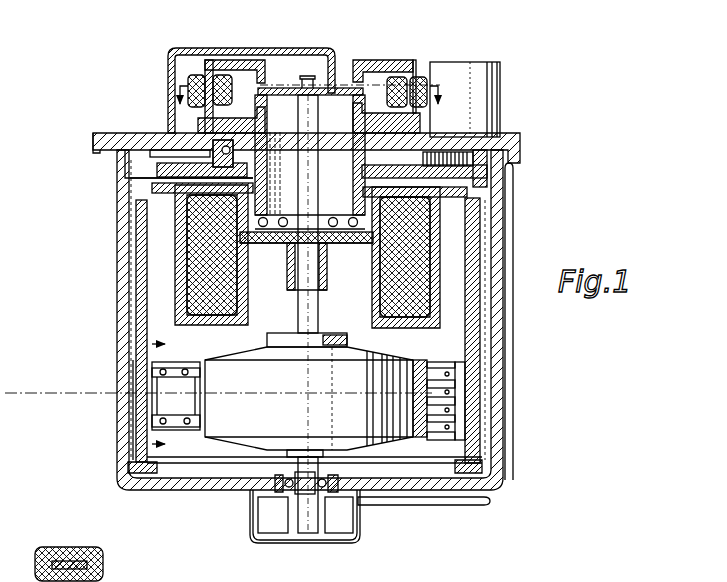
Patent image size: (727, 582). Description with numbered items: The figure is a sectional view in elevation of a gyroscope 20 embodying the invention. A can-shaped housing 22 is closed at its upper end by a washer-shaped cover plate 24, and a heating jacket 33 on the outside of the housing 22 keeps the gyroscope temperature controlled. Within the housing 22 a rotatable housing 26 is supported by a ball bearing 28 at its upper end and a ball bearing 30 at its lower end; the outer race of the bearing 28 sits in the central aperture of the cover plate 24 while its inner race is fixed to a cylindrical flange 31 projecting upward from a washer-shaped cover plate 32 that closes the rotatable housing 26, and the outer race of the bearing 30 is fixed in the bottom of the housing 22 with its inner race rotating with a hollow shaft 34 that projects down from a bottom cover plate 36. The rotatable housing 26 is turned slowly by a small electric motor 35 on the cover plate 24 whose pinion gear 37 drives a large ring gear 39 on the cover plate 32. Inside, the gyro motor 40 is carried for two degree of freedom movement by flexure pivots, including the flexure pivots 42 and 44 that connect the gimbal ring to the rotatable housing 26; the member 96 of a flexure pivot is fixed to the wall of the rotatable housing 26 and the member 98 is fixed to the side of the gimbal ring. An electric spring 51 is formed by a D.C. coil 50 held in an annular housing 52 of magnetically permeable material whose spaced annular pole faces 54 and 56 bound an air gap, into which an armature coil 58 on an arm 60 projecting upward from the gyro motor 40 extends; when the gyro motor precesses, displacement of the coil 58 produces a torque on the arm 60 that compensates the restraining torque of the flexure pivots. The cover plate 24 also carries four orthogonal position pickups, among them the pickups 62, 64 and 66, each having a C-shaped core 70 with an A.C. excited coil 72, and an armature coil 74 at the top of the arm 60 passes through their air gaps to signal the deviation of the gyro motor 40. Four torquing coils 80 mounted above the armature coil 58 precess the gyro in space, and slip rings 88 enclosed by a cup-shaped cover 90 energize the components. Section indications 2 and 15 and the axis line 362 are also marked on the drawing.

The section line 2- 2 is at (167, 395).
The section line 15- 15 is at (317, 109).
The gyroscope 20 is at (105, 236).
The can-shaped housing 22 is at (120, 273).
The washer-shaped cover plate 24 is at (143, 133).
The rotatable housing 26 is at (137, 442).
The ball bearing 28 is at (223, 168).
The ball bearing 30 is at (271, 481).
The cylindrical flange 31 is at (367, 166).
The washer-shaped cover plate 32 is at (125, 174).
The heating jacket 33 is at (513, 345).
The hollow shaft 34 is at (311, 494).
The small electric motor 35 is at (476, 97).
The bottom cover plate 36 is at (192, 459).
The pinion gear 37 is at (488, 157).
The ring gear 39 is at (450, 155).
The gyro motor 40 is at (316, 395).
The flexure pivot 42 is at (152, 412).
The flexure pivot 44 is at (452, 392).
The coil 50 is at (198, 287).
The electric spring 51 is at (170, 222).
The annular housing 52 is at (177, 250).
The annular pole face 54 is at (240, 234).
The annular pole face 56 is at (242, 247).
The armature coil 58 is at (252, 246).
The arm 60 is at (317, 140).
The position pickup 62 is at (197, 66).
The position pickup 64 is at (107, 560).
The position pickup 66 is at (418, 63).
The C-shaped core 70 is at (362, 61).
The coil 72 is at (395, 74).
The armature coil 74 is at (266, 87).
The torquing coil 80 is at (352, 210).
The slip rings 88 is at (290, 518).
The cup-shaped cover 90 is at (250, 542).
The member 96 is at (127, 383).
The member 98 is at (200, 422).
The rotor axis 362 is at (46, 381).